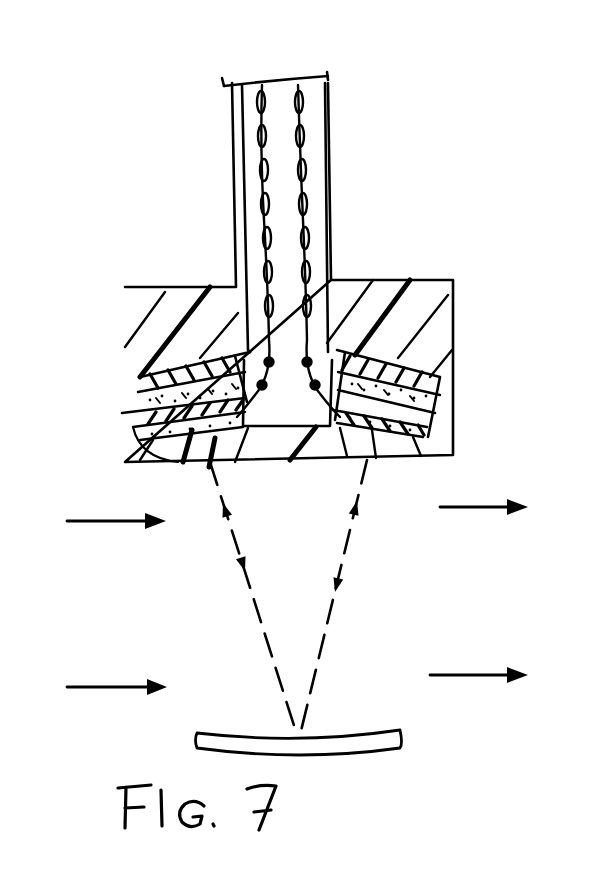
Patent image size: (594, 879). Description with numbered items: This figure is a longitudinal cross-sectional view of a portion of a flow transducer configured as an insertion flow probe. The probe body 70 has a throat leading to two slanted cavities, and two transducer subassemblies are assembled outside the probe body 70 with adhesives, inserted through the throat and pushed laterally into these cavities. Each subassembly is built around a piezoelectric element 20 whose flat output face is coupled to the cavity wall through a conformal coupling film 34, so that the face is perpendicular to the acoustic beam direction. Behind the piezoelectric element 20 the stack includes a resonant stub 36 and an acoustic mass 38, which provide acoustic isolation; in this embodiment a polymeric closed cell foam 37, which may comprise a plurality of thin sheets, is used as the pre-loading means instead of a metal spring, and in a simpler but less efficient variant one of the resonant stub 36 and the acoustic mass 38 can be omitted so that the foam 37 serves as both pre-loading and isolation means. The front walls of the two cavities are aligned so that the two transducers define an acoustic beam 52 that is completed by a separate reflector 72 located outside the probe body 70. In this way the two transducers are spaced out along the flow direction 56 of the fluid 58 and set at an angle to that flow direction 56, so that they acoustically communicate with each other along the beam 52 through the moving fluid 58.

The probe body 70 is at (447, 285).
The piezoelectric element 20 is at (135, 440).
The polymeric closed cell foam 37 is at (140, 380).
The acoustic mass 38 is at (140, 408).
The resonant stub 36 is at (135, 428).
The conformal coupling film 34 is at (178, 462).
The acoustic beam 52 is at (343, 557).
The flow direction 56 is at (100, 522).
The fluid 58 is at (590, 590).
The reflector 72 is at (375, 742).